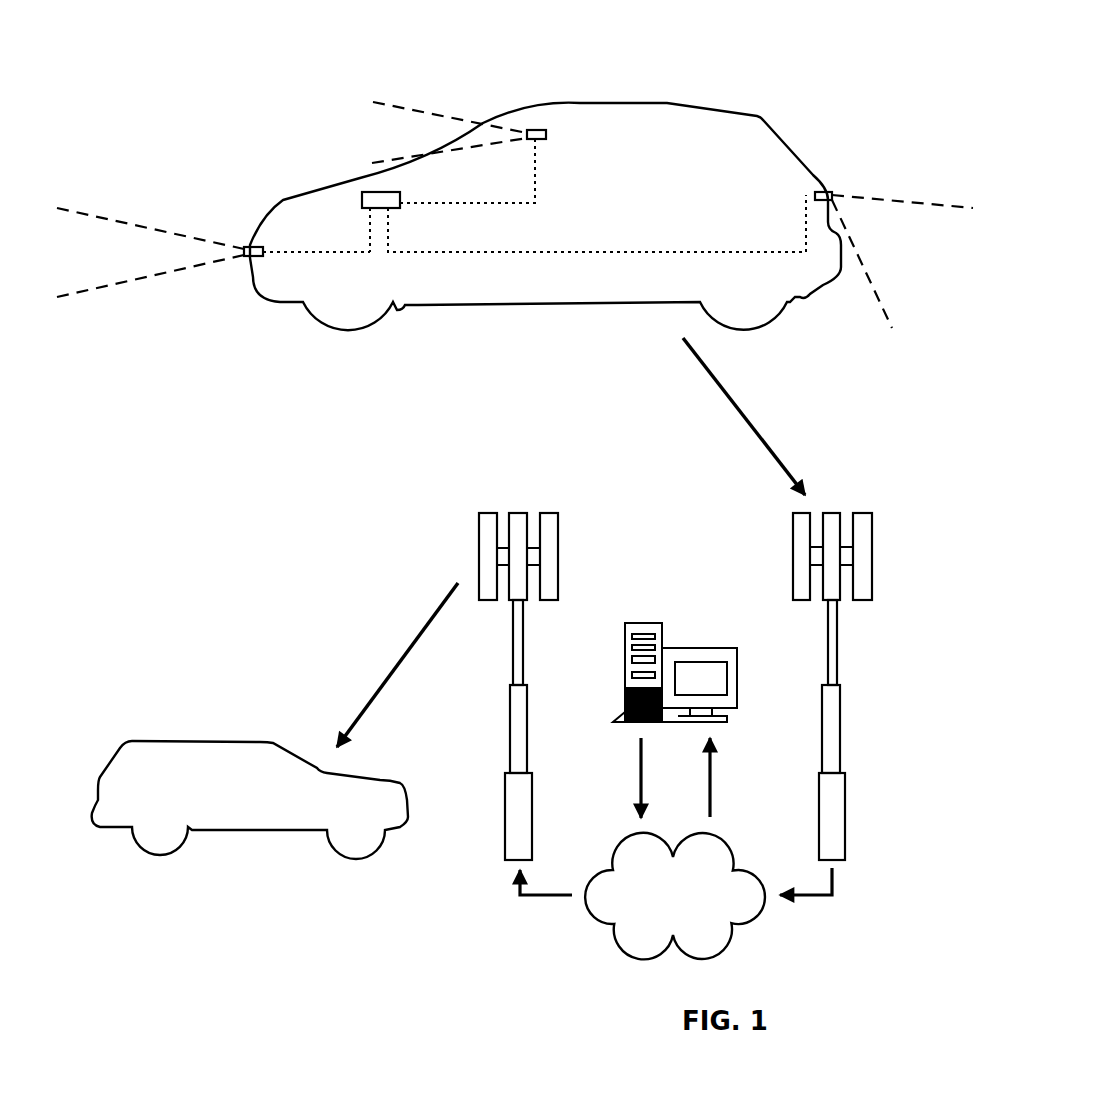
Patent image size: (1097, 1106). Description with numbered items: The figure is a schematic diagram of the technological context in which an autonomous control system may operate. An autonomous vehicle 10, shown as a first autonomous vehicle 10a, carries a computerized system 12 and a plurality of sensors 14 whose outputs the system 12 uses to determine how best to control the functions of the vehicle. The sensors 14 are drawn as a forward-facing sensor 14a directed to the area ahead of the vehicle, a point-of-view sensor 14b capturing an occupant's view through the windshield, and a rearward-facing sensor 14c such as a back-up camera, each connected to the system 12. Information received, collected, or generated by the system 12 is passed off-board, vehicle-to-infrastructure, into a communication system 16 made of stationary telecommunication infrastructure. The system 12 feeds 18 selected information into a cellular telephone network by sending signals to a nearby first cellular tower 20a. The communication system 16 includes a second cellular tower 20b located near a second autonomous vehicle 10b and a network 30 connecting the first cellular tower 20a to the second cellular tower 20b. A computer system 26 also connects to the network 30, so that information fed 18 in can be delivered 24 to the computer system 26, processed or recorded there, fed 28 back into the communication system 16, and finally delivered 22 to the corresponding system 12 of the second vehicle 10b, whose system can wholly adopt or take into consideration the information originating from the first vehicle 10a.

The autonomous vehicle 10 is at (459, 433).
The first autonomous vehicle 10a is at (403, 50).
The second autonomous vehicle 10b is at (193, 720).
The computerized system 12 is at (380, 197).
The sensors 14 is at (515, 189).
The forward-facing sensor 14a is at (252, 243).
The point-of-view sensor 14b is at (540, 129).
The rearward-facing sensor 14c is at (827, 190).
The communication system 16 is at (725, 688).
The feed of information 18 is at (722, 382).
The first cellular tower 20a is at (890, 528).
The second cellular tower 20b is at (575, 542).
The delivery of information 22 is at (402, 667).
The delivery to computer system 24 is at (710, 785).
The computer system 26 is at (703, 618).
The feed back from computer system 28 is at (641, 780).
The network 30 is at (676, 896).